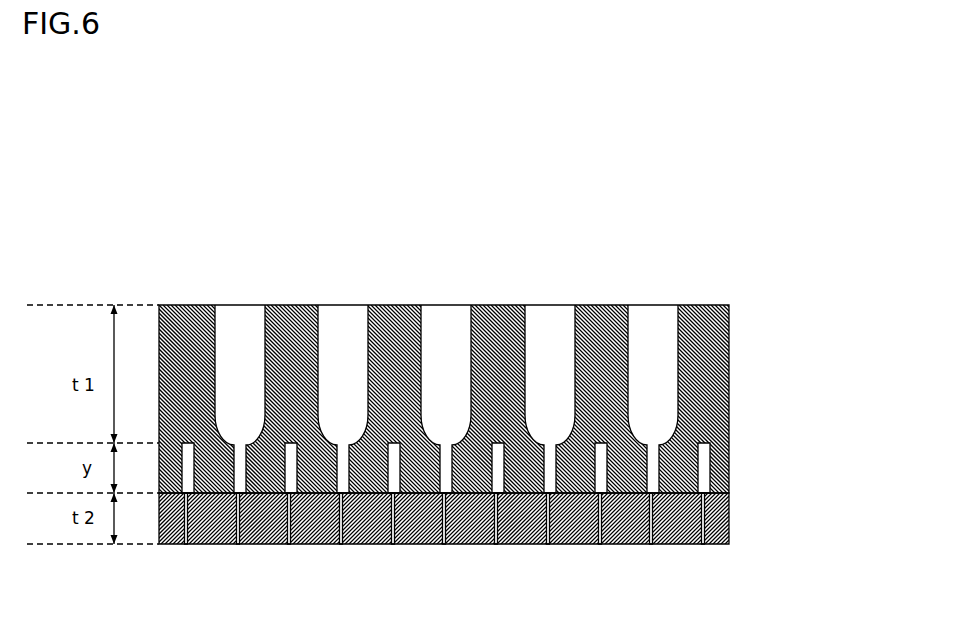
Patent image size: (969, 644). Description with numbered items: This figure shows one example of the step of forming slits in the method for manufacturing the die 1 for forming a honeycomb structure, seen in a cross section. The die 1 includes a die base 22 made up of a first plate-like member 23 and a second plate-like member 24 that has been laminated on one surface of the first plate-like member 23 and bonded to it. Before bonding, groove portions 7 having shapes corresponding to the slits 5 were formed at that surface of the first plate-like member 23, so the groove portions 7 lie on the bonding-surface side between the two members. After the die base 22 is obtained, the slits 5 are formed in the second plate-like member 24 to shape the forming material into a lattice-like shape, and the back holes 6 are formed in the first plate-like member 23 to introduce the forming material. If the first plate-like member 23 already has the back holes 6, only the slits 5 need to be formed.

The die for forming a honeycomb structure 1 is at (440, 258).
The die base 22 is at (827, 340).
The first plate-like member 23 is at (712, 372).
The second plate-like member 24 is at (675, 500).
The back holes 6 is at (558, 322).
The groove portions 7 is at (548, 463).
The slits 5 is at (595, 497).